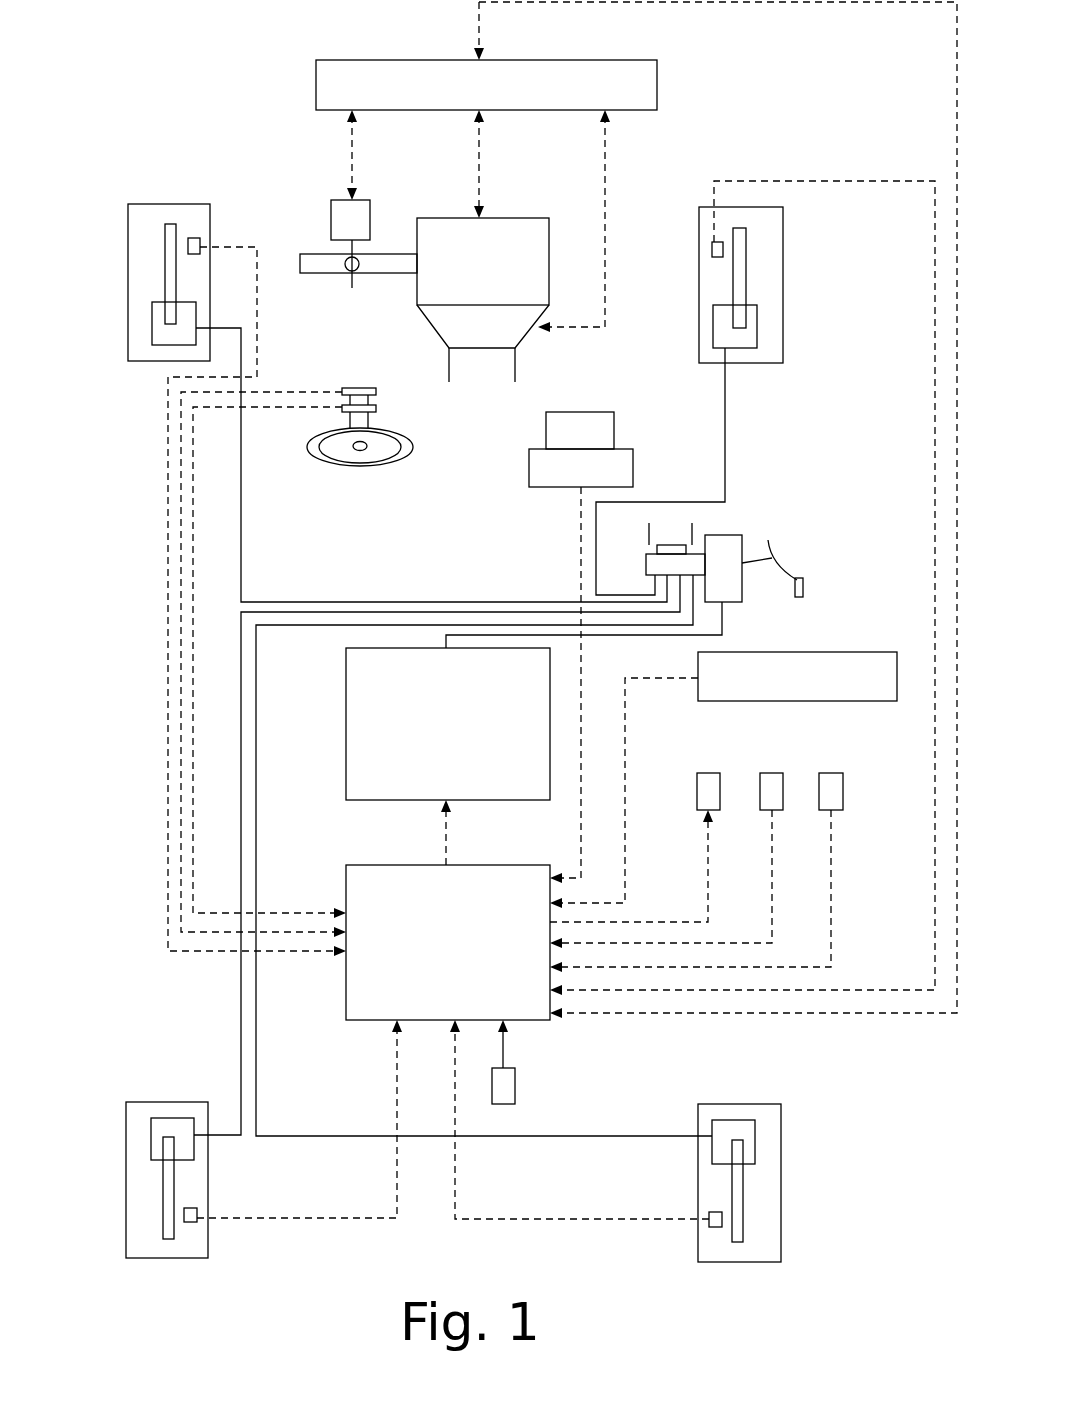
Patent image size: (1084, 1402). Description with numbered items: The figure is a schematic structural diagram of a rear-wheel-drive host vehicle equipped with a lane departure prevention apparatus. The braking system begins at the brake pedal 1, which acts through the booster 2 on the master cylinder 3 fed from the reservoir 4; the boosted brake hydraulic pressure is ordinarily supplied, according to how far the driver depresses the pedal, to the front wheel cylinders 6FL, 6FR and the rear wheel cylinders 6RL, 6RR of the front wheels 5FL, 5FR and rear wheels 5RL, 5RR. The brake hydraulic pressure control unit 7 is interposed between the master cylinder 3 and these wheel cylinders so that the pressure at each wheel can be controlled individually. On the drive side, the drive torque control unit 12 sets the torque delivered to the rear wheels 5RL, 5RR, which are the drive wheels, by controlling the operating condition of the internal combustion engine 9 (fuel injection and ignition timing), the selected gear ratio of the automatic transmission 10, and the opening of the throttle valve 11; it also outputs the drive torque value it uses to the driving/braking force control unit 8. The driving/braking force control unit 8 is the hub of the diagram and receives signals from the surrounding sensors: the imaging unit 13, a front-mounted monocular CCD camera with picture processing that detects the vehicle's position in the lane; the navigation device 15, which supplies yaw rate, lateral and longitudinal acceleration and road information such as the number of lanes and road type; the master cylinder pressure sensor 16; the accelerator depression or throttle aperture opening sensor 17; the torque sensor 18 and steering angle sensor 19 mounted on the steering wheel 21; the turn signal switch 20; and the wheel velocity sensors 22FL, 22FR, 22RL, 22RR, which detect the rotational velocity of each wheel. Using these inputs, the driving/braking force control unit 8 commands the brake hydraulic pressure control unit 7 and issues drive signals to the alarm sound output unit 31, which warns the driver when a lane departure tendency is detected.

The brake pedal 1 is at (803, 583).
The booster 2 is at (742, 595).
The master cylinder 3 is at (646, 565).
The reservoir 4 is at (649, 537).
The front wheel 5FL is at (148, 204).
The front wheel 5FR is at (783, 260).
The rear wheel 5RL is at (146, 1102).
The rear wheel 5RR is at (781, 1104).
The front wheel cylinder 6FL is at (152, 327).
The front wheel cylinder 6FR is at (757, 326).
The rear wheel cylinder 6RL is at (126, 1137).
The rear wheel cylinder 6RR is at (755, 1138).
The brake hydraulic pressure control unit 7 is at (346, 730).
The driving/braking force control unit 8 is at (362, 865).
The internal combustion engine 9 is at (512, 218).
The automatic transmission 10 is at (417, 322).
The throttle valve 11 is at (340, 276).
The drive torque control unit 12 is at (657, 83).
The imaging unit 13 is at (633, 457).
The navigation device 15 is at (870, 652).
The master cylinder pressure sensor 16 is at (773, 773).
The accelerator depression or throttle aperture opening sensor 17 is at (832, 773).
The torque sensor 18 is at (376, 408).
The steering angle sensor 19 is at (376, 392).
The turn signal switch 20 is at (515, 1080).
The steering wheel 21 is at (413, 452).
The front wheel velocity sensor 22FL is at (200, 240).
The front wheel velocity sensor 22FR is at (712, 248).
The rear wheel velocity sensor 22RL is at (197, 1220).
The rear wheel velocity sensor 22RR is at (709, 1225).
The alarm sound output unit 31 is at (710, 773).